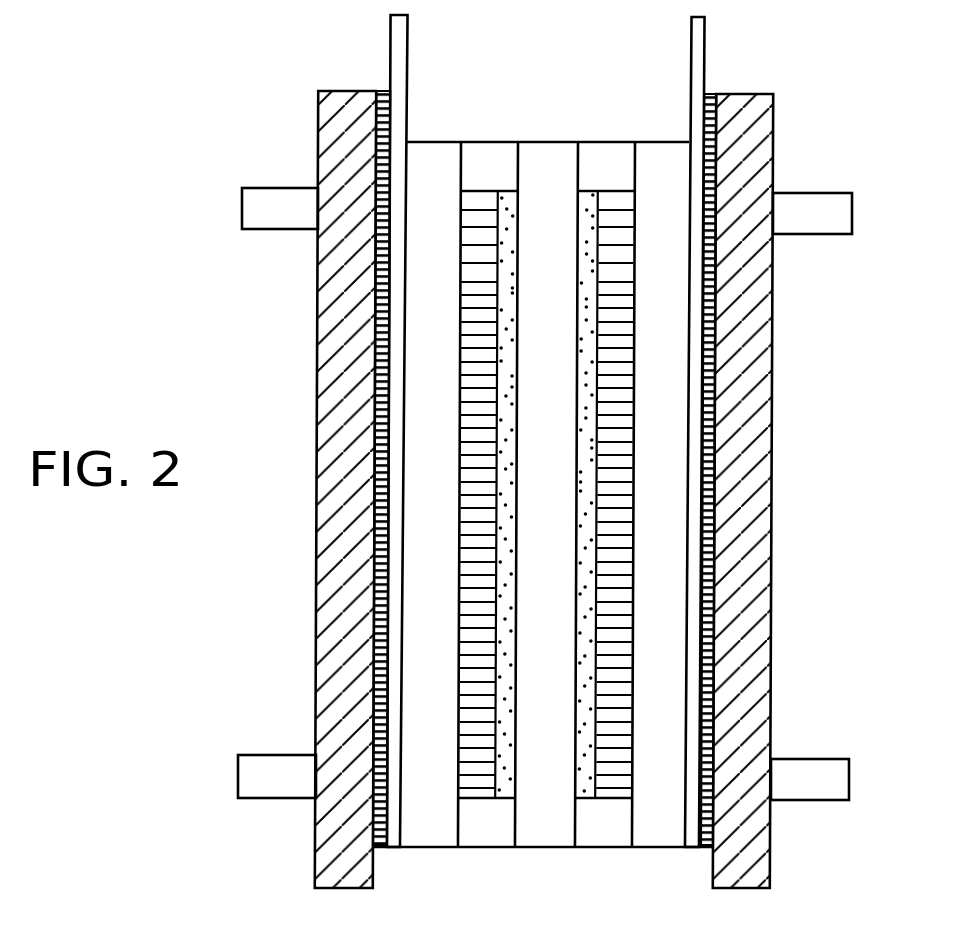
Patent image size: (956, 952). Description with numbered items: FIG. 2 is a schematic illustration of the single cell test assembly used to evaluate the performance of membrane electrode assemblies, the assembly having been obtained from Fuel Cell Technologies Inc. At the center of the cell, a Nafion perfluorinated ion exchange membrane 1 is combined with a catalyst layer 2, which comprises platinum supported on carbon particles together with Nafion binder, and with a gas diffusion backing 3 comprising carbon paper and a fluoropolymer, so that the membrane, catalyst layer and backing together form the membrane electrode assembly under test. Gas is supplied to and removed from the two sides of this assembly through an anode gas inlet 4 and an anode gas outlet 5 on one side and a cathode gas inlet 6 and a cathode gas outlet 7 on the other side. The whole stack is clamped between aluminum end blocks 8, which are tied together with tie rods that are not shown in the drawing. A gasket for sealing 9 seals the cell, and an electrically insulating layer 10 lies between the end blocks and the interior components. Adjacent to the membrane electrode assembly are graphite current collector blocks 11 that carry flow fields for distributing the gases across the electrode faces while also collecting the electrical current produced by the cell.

The perfluorinated ion exchange membrane 1 is at (550, 183).
The catalyst layer 2 is at (512, 203).
The gas diffusion backing 3 is at (617, 203).
The anode gas inlet 4 is at (827, 193).
The anode gas outlet 5 is at (813, 757).
The cathode gas inlet 6 is at (255, 188).
The cathode gas outlet 7 is at (257, 755).
The aluminum end blocks 8 is at (327, 563).
The gasket for sealing 9 is at (608, 158).
The electrically insulating layer 10 is at (385, 91).
The graphite current collector blocks 11 is at (436, 823).